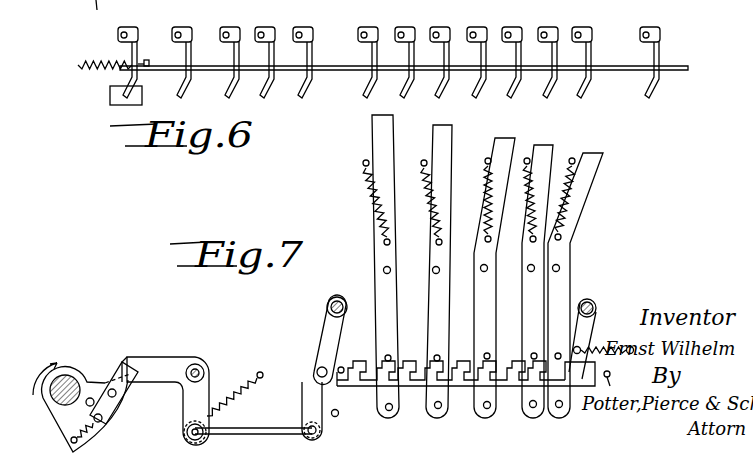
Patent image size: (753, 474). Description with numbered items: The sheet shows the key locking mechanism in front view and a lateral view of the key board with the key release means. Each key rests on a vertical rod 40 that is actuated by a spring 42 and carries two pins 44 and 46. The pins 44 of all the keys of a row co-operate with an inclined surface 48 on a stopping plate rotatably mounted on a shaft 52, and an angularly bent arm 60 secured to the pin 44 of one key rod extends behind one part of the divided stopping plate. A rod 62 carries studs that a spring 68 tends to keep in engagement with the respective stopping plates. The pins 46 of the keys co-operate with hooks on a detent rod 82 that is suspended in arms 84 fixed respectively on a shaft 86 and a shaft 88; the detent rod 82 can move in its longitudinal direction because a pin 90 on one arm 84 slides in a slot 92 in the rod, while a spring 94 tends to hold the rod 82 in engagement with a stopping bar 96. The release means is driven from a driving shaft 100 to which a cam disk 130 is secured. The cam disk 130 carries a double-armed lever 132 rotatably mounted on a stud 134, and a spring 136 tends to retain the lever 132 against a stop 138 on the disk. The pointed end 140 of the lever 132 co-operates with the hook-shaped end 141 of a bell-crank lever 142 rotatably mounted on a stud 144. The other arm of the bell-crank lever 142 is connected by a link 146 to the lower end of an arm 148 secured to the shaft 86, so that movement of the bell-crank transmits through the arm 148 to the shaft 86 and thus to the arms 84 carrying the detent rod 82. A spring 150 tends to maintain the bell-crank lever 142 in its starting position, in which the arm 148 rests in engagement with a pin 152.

In FIG. 6, the spring 68 is at (92, 60).
In FIG. 6, the shaft 52 is at (389, 57).
In FIG. 6, the rod 62 is at (333, 66).
In FIG. 6, the inclined surface 48 is at (225, 97).
In FIG. 6, the angularly bent arm 60 is at (110, 96).
In FIG. 7, the vertical rod 40 is at (433, 135).
In FIG. 7, the spring 42 is at (428, 192).
In FIG. 7, the pin 44 is at (432, 270).
In FIG. 7, the pin 46 is at (433, 356).
In FIG. 7, the detent rod 82 is at (510, 390).
In FIG. 7, the arm 84 is at (325, 332).
In FIG. 7, the shaft 86 is at (336, 297).
In FIG. 7, the shaft 88 is at (590, 299).
In FIG. 7, the pin 90 is at (316, 371).
In FIG. 7, the slot 92 is at (344, 366).
In FIG. 7, the spring 94 is at (620, 348).
In FIG. 7, the stopping bar 96 is at (617, 385).
In FIG. 7, the driving shaft 100 is at (65, 374).
In FIG. 7, the cam disk 130 is at (65, 422).
In FIG. 7, the double-armed lever 132 is at (103, 418).
In FIG. 7, the stud 134 is at (117, 393).
In FIG. 7, the spring 136 is at (103, 438).
In FIG. 7, the stop 138 is at (90, 398).
In FIG. 7, the pointed end 140 is at (123, 372).
In FIG. 7, the hook-shaped end 141 is at (143, 357).
In FIG. 7, the bell-crank lever 142 is at (180, 380).
In FIG. 7, the stud 144 is at (202, 364).
In FIG. 7, the link 146 is at (240, 428).
In FIG. 7, the arm 148 is at (312, 407).
In FIG. 7, the spring 150 is at (226, 395).
In FIG. 7, the pin 152 is at (334, 416).